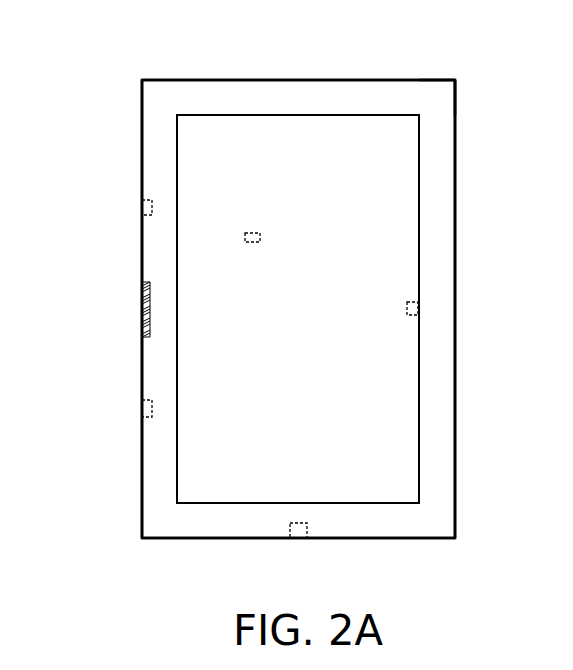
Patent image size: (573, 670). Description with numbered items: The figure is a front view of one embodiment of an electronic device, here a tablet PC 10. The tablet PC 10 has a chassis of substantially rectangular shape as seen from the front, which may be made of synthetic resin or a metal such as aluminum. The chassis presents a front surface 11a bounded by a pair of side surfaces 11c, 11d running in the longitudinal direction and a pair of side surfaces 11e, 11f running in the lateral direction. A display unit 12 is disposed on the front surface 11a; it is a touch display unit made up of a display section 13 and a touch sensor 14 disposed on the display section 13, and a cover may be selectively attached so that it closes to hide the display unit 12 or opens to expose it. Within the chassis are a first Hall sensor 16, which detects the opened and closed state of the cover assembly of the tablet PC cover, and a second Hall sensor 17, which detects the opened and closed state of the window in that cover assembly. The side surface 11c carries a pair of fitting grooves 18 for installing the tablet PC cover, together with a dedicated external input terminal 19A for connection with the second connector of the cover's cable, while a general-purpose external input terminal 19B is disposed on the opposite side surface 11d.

The tablet PC 10 is at (172, 74).
The front surface 11a is at (421, 95).
The side surface 11c is at (141, 141).
The side surface 11d is at (456, 140).
The side surface 11e is at (230, 80).
The side surface 11f is at (370, 540).
The display unit 12 is at (333, 137).
The display section 13 is at (298, 309).
The touch sensor 14 is at (298, 309).
The first Hall sensor 16 is at (418, 307).
The second Hall sensor 17 is at (245, 237).
The fitting grooves 18 is at (142, 208).
The dedicated external input terminal 19A is at (134, 303).
The general-purpose external input terminal 19B is at (298, 540).